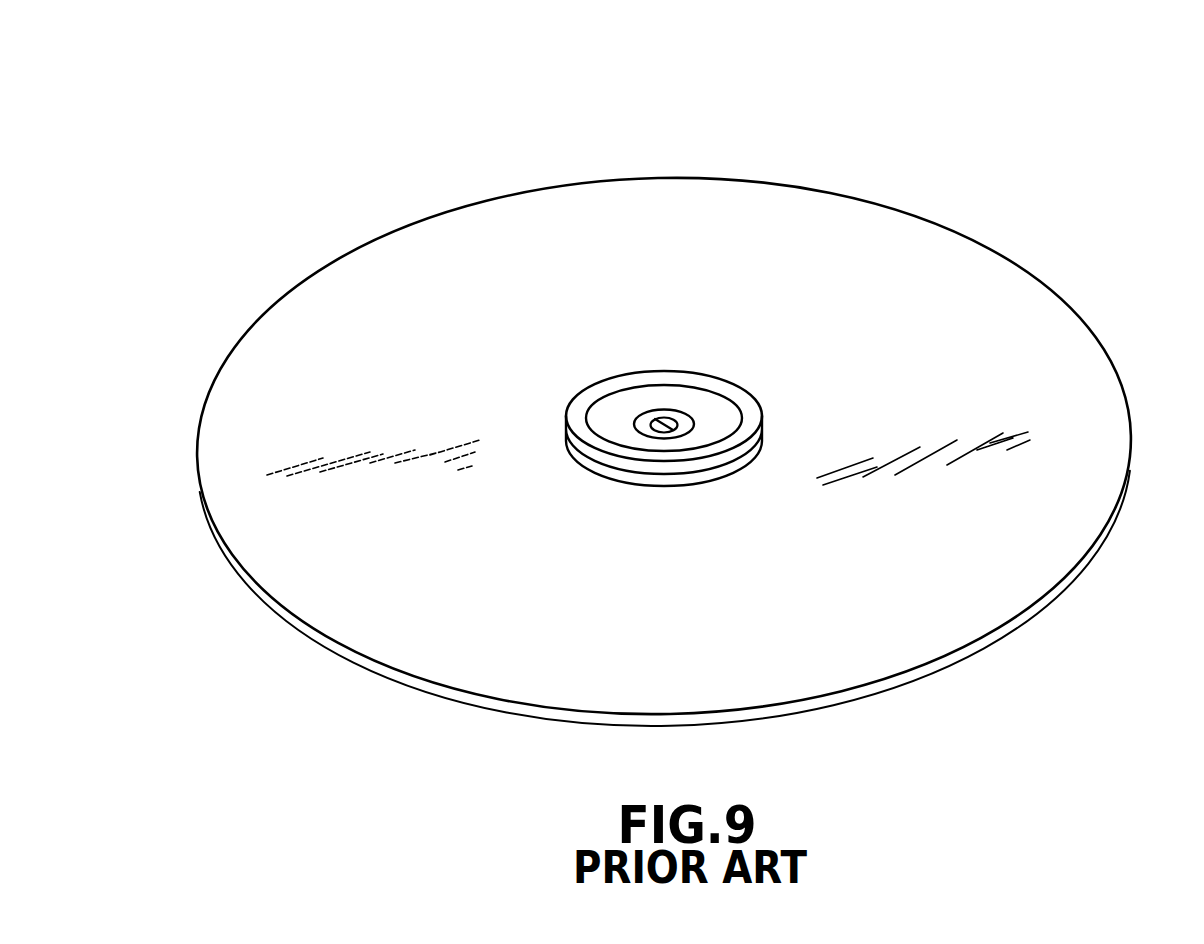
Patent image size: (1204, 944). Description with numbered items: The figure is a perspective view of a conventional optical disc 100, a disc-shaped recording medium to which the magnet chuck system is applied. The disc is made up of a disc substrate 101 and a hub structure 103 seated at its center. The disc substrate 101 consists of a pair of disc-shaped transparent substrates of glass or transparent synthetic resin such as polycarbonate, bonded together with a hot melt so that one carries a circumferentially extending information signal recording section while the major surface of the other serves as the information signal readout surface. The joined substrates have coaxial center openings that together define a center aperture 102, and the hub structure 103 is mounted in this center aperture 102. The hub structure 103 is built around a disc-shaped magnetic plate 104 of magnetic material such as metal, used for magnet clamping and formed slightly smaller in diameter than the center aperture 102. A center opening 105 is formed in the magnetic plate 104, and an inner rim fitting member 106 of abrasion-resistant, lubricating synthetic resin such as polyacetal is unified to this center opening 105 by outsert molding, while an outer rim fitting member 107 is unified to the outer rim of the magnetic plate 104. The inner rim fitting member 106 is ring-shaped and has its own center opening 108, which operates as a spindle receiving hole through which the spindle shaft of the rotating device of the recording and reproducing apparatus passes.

The optical disc 100 is at (992, 220).
The disc substrate 101 is at (1093, 375).
The center aperture 102 is at (747, 458).
The hub structure 103 is at (648, 86).
The magnetic plate 104 is at (635, 397).
The center opening 105 is at (654, 440).
The inner rim fitting member 106 is at (667, 407).
The outer rim fitting member 107 is at (737, 393).
The center opening of inner rim fitting member 108 is at (677, 440).